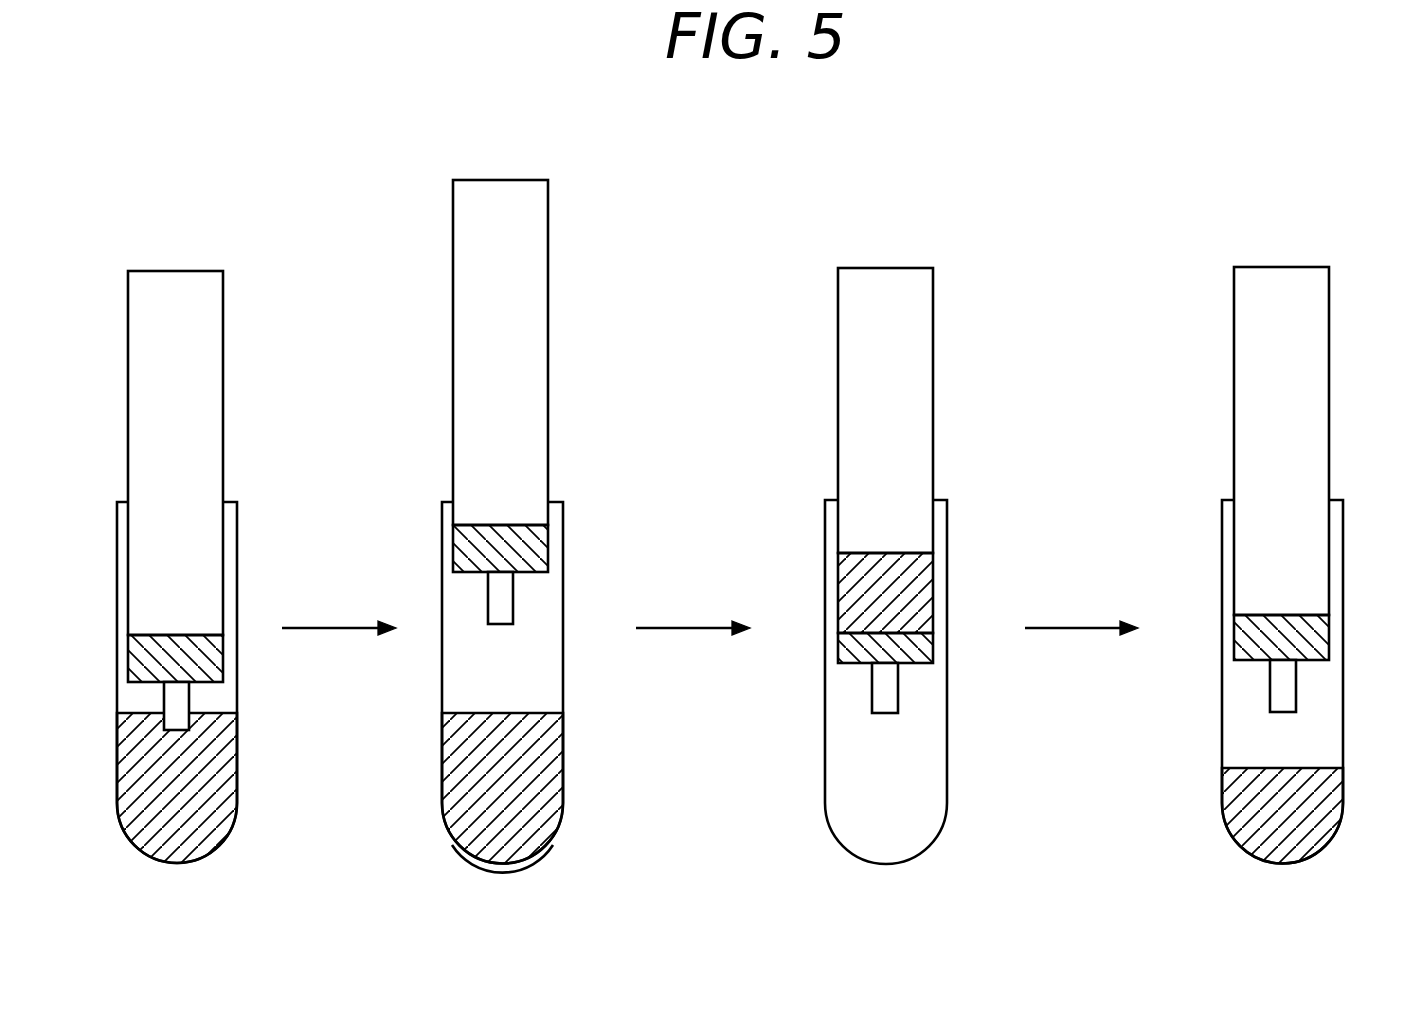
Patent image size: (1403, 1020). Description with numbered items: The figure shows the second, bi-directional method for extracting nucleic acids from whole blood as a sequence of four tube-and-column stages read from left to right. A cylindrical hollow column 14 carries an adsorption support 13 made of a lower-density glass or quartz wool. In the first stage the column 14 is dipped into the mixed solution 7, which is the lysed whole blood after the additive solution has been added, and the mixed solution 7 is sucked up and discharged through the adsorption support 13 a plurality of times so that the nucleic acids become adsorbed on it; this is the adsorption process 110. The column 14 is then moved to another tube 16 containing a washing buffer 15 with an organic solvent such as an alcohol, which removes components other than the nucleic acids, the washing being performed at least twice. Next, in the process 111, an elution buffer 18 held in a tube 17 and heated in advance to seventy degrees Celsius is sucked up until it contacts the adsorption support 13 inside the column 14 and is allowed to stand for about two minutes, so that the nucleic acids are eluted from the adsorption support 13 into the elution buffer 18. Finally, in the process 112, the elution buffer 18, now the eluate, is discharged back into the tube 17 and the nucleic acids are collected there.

The mixed solution 7 is at (186, 858).
The adsorption support 13 is at (210, 662).
The cylindrical hollow column 14 is at (190, 270).
The washing buffer 15 is at (545, 760).
The tube 16 is at (517, 858).
The tube 17 is at (947, 758).
The elution buffer 18 is at (920, 623).
The adsorption process 110 is at (330, 626).
The elution contact process 111 is at (682, 626).
The eluate discharge process 112 is at (1073, 626).